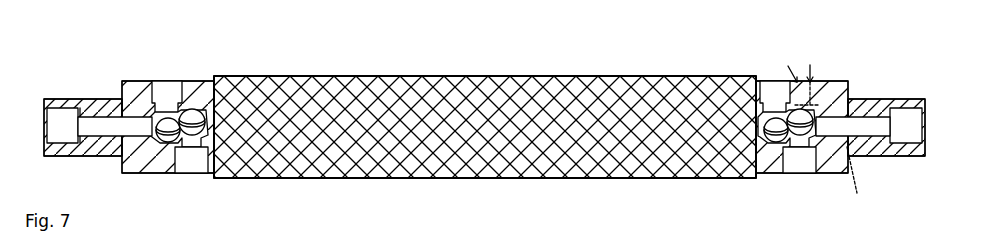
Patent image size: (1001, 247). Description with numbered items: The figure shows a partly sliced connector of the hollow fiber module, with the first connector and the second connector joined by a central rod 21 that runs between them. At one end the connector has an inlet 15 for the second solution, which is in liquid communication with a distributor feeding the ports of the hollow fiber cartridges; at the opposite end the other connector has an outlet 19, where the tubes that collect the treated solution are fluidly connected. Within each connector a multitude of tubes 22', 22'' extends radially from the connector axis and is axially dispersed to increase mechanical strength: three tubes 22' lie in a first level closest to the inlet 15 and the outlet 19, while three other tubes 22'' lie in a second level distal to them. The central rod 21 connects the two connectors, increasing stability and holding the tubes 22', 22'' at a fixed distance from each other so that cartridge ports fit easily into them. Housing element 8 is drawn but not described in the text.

The housing 8 is at (144, 168).
The inlet 15 is at (928, 135).
The outlet 19 is at (36, 128).
The central rod 21 is at (633, 93).
The tubes 22' is at (152, 82).
The tubes 22'' is at (218, 77).